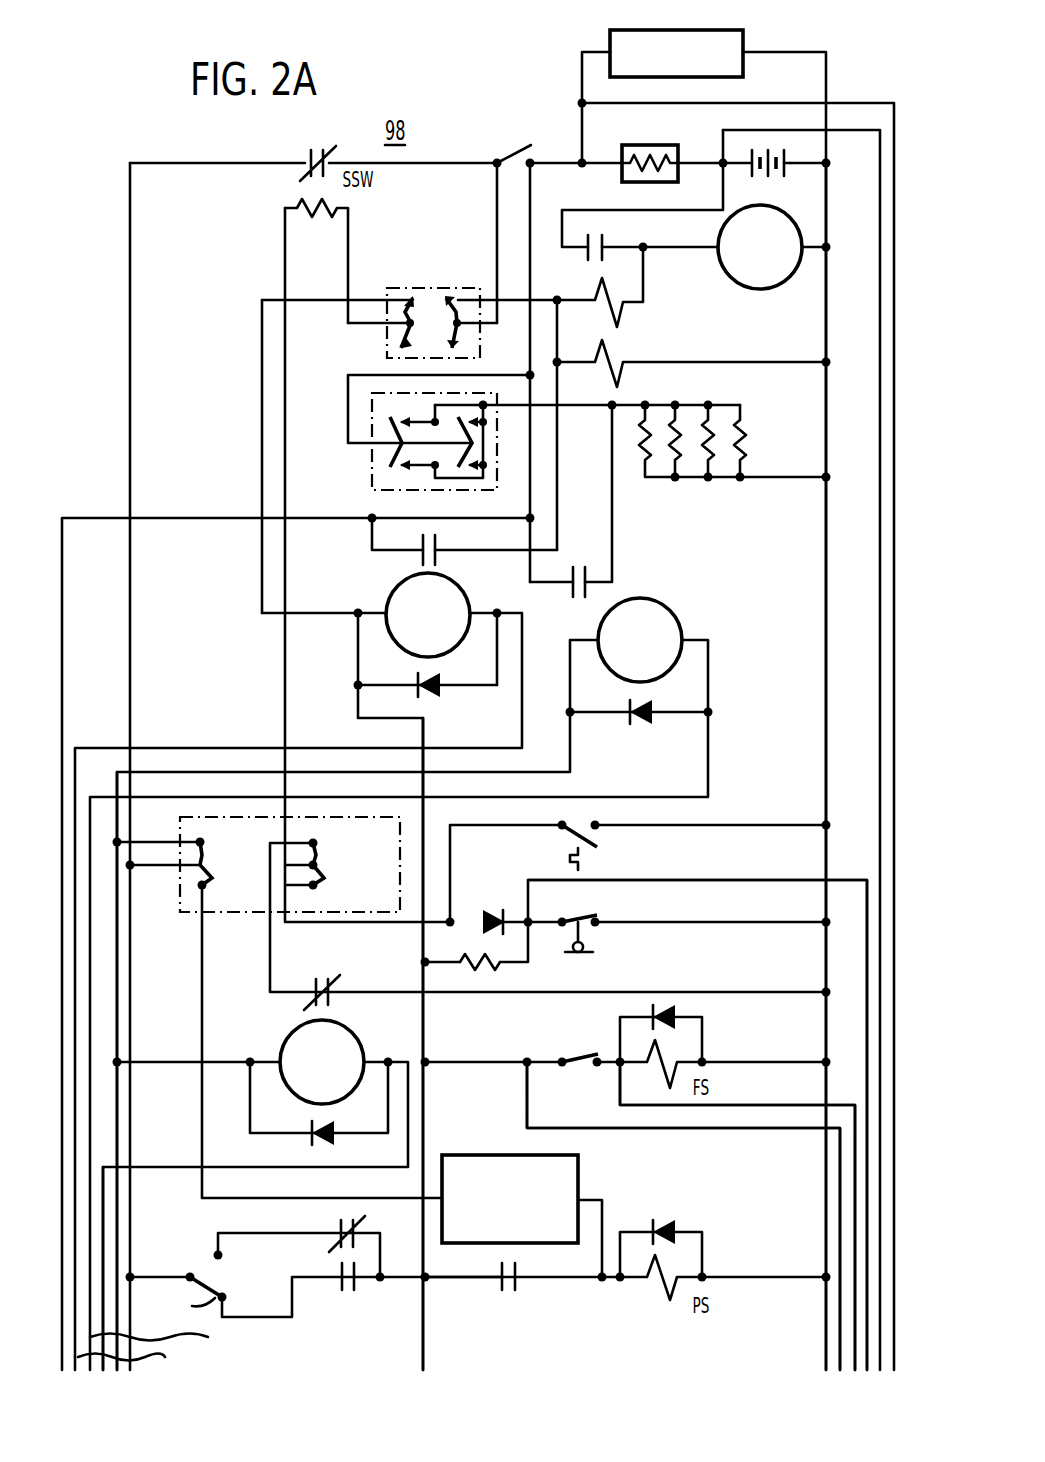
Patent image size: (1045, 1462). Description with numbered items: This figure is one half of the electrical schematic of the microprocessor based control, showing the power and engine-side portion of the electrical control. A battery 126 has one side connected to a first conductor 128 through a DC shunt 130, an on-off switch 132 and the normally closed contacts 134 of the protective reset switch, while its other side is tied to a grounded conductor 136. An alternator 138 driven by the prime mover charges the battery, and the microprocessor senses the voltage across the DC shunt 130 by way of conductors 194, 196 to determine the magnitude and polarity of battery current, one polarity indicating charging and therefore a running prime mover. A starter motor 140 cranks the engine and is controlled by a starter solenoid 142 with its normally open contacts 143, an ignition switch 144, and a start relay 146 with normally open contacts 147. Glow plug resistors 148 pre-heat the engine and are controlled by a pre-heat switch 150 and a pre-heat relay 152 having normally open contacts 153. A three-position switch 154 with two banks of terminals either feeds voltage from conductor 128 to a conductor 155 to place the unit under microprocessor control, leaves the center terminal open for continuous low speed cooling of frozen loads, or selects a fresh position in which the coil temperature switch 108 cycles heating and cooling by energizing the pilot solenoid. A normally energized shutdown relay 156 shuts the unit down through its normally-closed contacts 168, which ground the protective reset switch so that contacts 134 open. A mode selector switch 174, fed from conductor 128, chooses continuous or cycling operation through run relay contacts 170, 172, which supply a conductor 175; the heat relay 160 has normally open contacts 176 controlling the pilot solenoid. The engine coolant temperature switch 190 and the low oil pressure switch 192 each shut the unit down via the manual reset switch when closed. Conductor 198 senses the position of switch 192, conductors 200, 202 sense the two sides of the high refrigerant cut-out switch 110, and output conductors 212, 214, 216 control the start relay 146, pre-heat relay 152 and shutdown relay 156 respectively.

The coil temperature switch 108 is at (583, 1178).
The high refrigerant cut-out switch 110 is at (585, 1068).
The battery 126 is at (770, 178).
The first conductor 128 is at (130, 175).
The DC shunt 130 is at (660, 145).
The on-off switch 132 is at (525, 150).
The normally closed contacts 134 is at (312, 152).
The conductor 136 is at (826, 210).
The alternator 138 is at (745, 35).
The starter motor 140 is at (768, 290).
The starter solenoid 142 is at (592, 345).
The normally open contacts 143 is at (598, 237).
The ignition switch 144 is at (422, 288).
The start relay 146 is at (508, 606).
The normally open contacts 147 is at (420, 558).
The glow plug resistors 148 is at (735, 420).
The pre-heat switch 150 is at (372, 475).
The pre-heat relay 152 is at (717, 632).
The normally open contacts 153 is at (600, 568).
The three-position switch 154 is at (236, 912).
The conductor 155 is at (120, 1022).
The shutdown relay 156 is at (405, 1045).
The heat relay 160 is at (567, 1322).
The normally-closed contacts 168 is at (325, 975).
The normally-closed contacts 170 is at (345, 1222).
The normally open contacts 172 is at (348, 1292).
The mode selector switch 174 is at (173, 1263).
The conductor 175 is at (430, 1085).
The normally open contacts 176 is at (502, 1290).
The engine coolant temperature switch 190 is at (560, 836).
The low oil pressure switch 192 is at (590, 930).
The conductor 194 is at (838, 103).
The conductor 196 is at (878, 134).
The conductor 198 is at (745, 880).
The conductor 200 is at (500, 972).
The conductor 202 is at (757, 1133).
The conductor 212 is at (138, 1356).
The conductor 214 is at (164, 1339).
The conductor 216 is at (140, 1167).